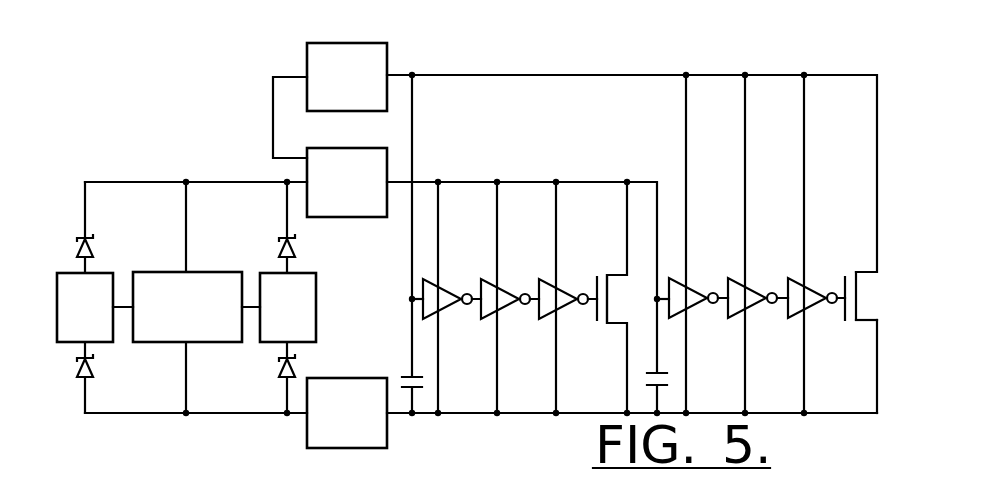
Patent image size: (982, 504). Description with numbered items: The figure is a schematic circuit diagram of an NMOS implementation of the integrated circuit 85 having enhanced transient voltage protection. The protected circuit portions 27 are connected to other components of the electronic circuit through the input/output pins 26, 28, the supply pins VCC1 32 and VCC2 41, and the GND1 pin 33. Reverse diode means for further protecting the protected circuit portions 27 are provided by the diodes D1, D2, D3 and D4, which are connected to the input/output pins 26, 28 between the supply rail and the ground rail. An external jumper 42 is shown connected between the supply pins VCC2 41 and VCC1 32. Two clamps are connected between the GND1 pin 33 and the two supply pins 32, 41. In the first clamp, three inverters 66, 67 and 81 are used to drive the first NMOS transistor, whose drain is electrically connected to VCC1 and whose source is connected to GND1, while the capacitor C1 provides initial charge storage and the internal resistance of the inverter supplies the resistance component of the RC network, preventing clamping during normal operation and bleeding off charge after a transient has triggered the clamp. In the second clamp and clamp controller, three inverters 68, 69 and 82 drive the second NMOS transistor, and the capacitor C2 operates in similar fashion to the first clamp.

The integrated circuit 85 is at (572, 44).
The VCC2 pin 41 is at (315, 72).
The external jumper 42 is at (255, 117).
The VCC1 pin 32 is at (328, 217).
The GND1 pin 33 is at (352, 393).
The input/output pin 28 is at (112, 287).
The protected circuit portions 27 is at (198, 275).
The input/output pin 26 is at (261, 325).
The first inverter 66 is at (458, 283).
The second inverter 67 is at (516, 283).
The third inverter 81 is at (587, 285).
The third inverter 68 is at (705, 282).
The fourth inverter 69 is at (764, 282).
The inverter 82 is at (836, 283).
The diode D1 is at (72, 249).
The diode D2 is at (72, 369).
The diode D3 is at (275, 249).
The diode D4 is at (275, 369).
The capacitor C1 is at (417, 366).
The capacitor C2 is at (662, 365).